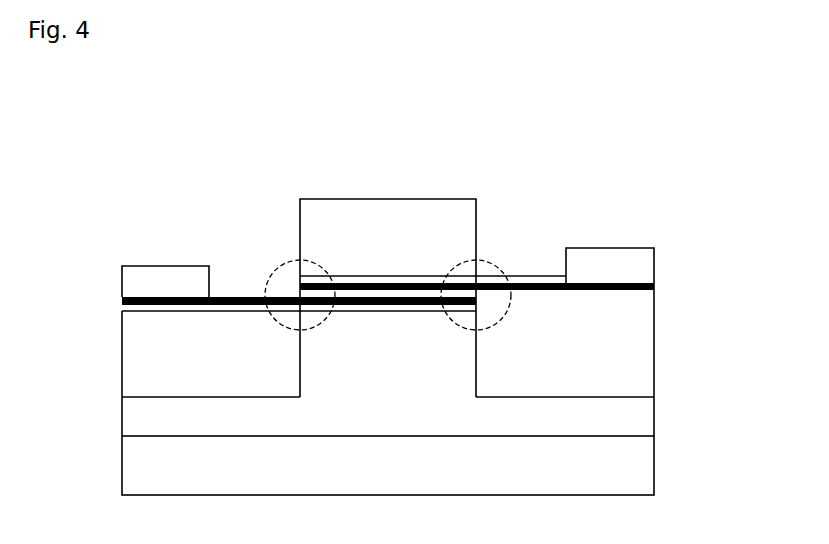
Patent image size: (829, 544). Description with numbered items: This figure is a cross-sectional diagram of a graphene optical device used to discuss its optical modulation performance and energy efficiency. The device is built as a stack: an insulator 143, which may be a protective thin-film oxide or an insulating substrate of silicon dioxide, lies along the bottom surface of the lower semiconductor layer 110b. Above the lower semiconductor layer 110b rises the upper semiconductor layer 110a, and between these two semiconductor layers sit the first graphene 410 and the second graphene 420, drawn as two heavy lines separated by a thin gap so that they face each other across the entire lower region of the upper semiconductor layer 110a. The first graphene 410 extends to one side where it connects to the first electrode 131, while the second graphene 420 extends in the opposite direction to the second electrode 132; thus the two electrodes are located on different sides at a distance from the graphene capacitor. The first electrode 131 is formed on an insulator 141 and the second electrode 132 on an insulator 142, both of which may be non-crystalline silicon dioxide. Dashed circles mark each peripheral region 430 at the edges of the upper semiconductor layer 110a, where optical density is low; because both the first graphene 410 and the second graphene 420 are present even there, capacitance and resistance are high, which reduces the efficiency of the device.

The upper semiconductor layer 110a is at (428, 225).
The lower semiconductor layer 110b is at (632, 418).
The first electrode 131 is at (625, 260).
The second electrode 132 is at (135, 281).
The insulator 141 is at (632, 351).
The insulator 142 is at (135, 354).
The insulator 143 is at (632, 468).
The first graphene 410 is at (500, 278).
The second graphene 420 is at (230, 299).
The peripheral region 430 is at (448, 268).